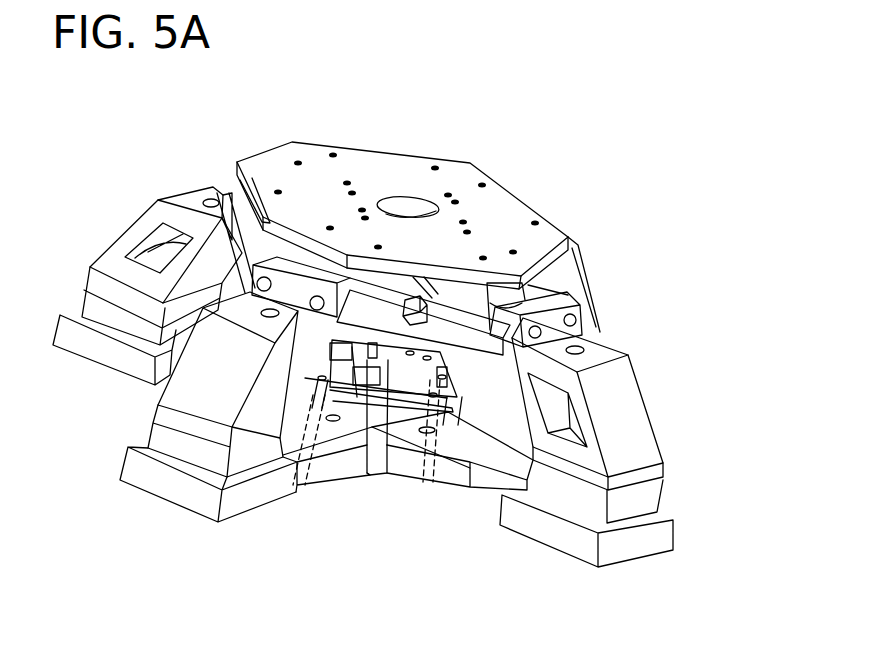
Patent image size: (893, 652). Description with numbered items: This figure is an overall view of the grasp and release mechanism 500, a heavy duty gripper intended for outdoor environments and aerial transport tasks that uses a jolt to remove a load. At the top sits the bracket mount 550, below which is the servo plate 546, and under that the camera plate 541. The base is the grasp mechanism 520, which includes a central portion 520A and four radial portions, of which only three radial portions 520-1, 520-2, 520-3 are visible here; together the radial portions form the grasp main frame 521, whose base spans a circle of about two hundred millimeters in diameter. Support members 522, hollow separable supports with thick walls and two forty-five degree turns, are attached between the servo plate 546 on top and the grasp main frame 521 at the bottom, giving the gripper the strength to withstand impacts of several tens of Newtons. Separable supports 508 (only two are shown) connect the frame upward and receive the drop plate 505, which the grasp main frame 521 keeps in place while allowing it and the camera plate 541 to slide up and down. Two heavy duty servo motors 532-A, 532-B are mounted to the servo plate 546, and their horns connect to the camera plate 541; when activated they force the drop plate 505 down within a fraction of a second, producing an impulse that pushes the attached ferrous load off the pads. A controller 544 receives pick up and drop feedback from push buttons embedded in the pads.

The grasp and release mechanism 500 is at (156, 148).
The bracket mount 550 is at (512, 190).
The servo plate 546 is at (472, 332).
The controller 544 is at (403, 310).
The camera plate 541 is at (433, 388).
The radial portion 520-3 is at (176, 333).
The separable support 508 is at (290, 393).
The grasp main frame 521 is at (203, 460).
The radial portion 520-2 is at (265, 462).
The radial portion 520-1 is at (492, 462).
The drop plate 505 is at (560, 548).
The support member 522 is at (664, 388).
The grasp mechanism 520 is at (672, 480).
The servo motor 532-A is at (330, 422).
The servo motor 532-B is at (420, 425).
The central portion 520A is at (372, 448).